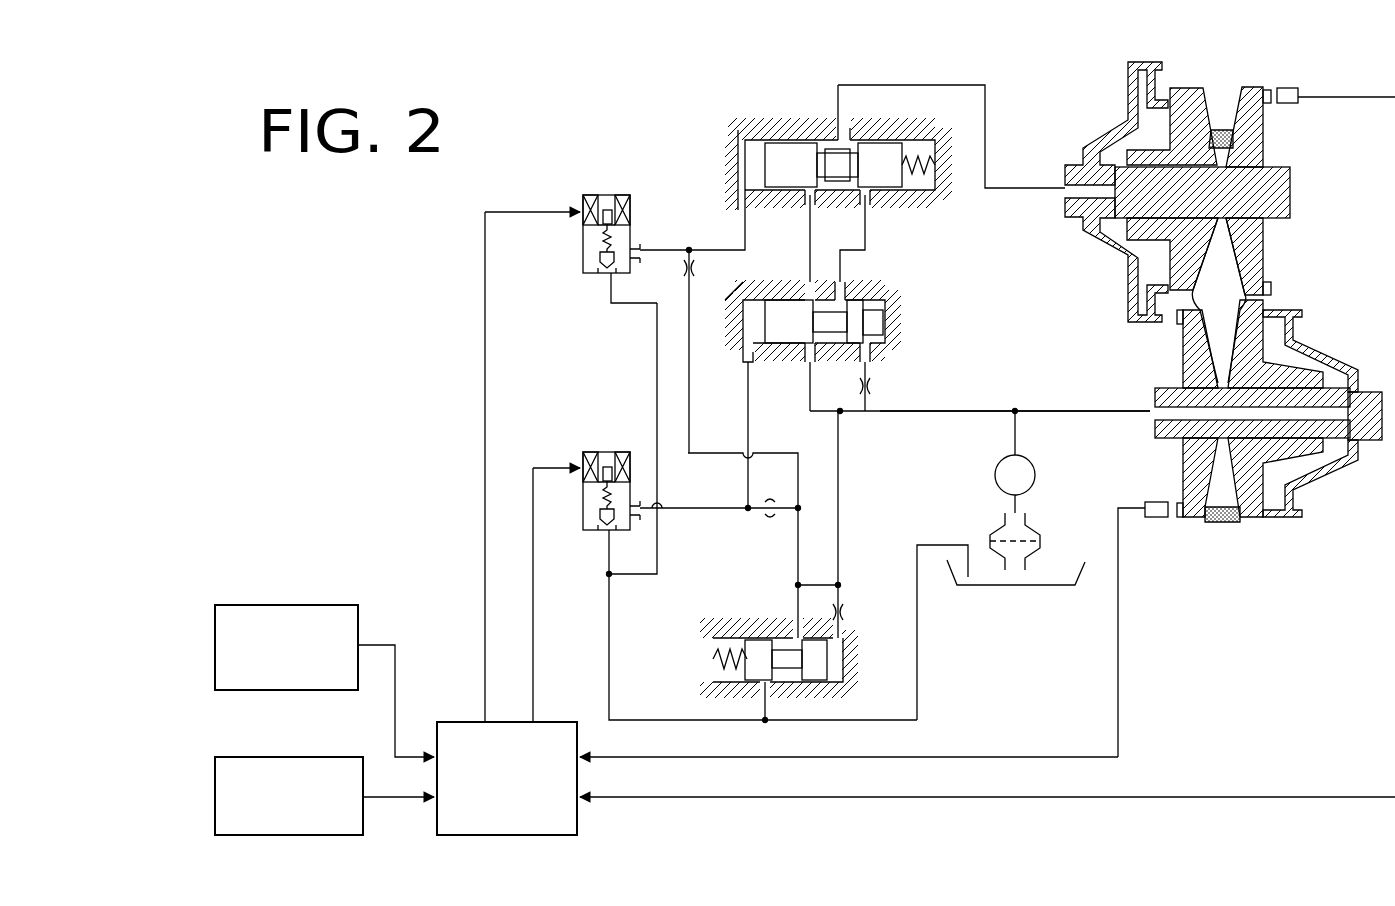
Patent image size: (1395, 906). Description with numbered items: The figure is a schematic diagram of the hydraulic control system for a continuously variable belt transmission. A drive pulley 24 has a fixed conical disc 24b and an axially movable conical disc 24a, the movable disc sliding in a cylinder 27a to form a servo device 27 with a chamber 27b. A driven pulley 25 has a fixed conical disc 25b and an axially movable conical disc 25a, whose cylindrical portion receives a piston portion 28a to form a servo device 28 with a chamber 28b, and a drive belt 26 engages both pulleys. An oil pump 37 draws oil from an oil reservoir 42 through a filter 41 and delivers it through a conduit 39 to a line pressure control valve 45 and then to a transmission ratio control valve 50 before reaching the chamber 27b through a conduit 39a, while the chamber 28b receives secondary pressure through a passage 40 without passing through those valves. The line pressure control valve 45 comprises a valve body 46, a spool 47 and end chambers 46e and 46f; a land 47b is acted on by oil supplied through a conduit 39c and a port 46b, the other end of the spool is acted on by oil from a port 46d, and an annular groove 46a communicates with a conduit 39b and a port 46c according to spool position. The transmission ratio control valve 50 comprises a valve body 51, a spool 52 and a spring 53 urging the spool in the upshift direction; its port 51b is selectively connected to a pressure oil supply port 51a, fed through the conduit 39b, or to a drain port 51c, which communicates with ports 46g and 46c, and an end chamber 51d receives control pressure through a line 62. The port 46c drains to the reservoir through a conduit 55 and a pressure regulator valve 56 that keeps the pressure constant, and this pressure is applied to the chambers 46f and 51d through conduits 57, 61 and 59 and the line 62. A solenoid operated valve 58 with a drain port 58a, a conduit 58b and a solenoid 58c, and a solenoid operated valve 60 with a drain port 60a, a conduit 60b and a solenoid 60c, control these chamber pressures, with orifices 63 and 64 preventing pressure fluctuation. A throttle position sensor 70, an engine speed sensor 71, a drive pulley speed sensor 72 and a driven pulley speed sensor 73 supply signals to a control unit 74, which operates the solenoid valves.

The drive pulley 24 is at (1227, 220).
The axially movable conical disc 24a is at (1190, 100).
The fixed conical disc 24b is at (1268, 254).
The driven pulley 25 is at (1229, 432).
The axially movable conical disc 25a is at (1256, 522).
The fixed conical disc 25b is at (1178, 474).
The drive belt 26 is at (1219, 130).
The servo device 27 is at (1100, 191).
The cylinder 27a is at (1128, 90).
The chamber 27b is at (1112, 152).
The servo device 28 is at (1329, 408).
The piston portion 28a is at (1334, 471).
The chamber 28b is at (1331, 364).
The oil pump 37 is at (1035, 478).
The passage 39 is at (924, 412).
The conduit 39a is at (1008, 186).
The conduit 39b is at (815, 243).
The conduit 39c is at (872, 408).
The passage 40 is at (1044, 410).
The filter 41 is at (1036, 548).
The oil reservoir 42 is at (1040, 588).
The line pressure control valve 45 is at (852, 350).
The valve body 46 is at (872, 297).
The annular groove 46a is at (795, 356).
The port 46b is at (876, 362).
The port 46c is at (829, 365).
The port 46d is at (748, 362).
The end chamber 46e is at (880, 342).
The end chamber 46f is at (744, 318).
The port 46g is at (850, 287).
The spool 47 is at (789, 311).
The land 47b is at (876, 318).
The transmission ratio control valve 50 is at (829, 181).
The valve body 51 is at (890, 134).
The pressure oil supply port 51a is at (812, 186).
The port 51b is at (848, 134).
The drain port 51c is at (868, 188).
The end chamber 51d is at (738, 165).
The spool 52 is at (787, 180).
The spring 53 is at (936, 158).
The conduit 55 is at (838, 542).
The pressure regulator valve 56 is at (844, 662).
The conduit 57 is at (794, 560).
The solenoid operated valve 58 is at (598, 448).
The drain port 58a is at (604, 542).
The conduit 58b is at (614, 684).
The solenoid 58c is at (578, 467).
The conduit 59 is at (734, 456).
The solenoid operated valve 60 is at (610, 195).
The drain port 60a is at (606, 284).
The conduit 60b is at (650, 402).
The solenoid 60c is at (584, 192).
The conduit 61 is at (749, 420).
The line 62 is at (737, 246).
The orifice 63 is at (770, 518).
The orifice 64 is at (682, 270).
The throttle position sensor 70 is at (362, 588).
The engine speed sensor 71 is at (362, 742).
The drive pulley speed sensor 72 is at (1281, 88).
The driven pulley speed sensor 73 is at (1150, 518).
The control unit 74 is at (553, 721).